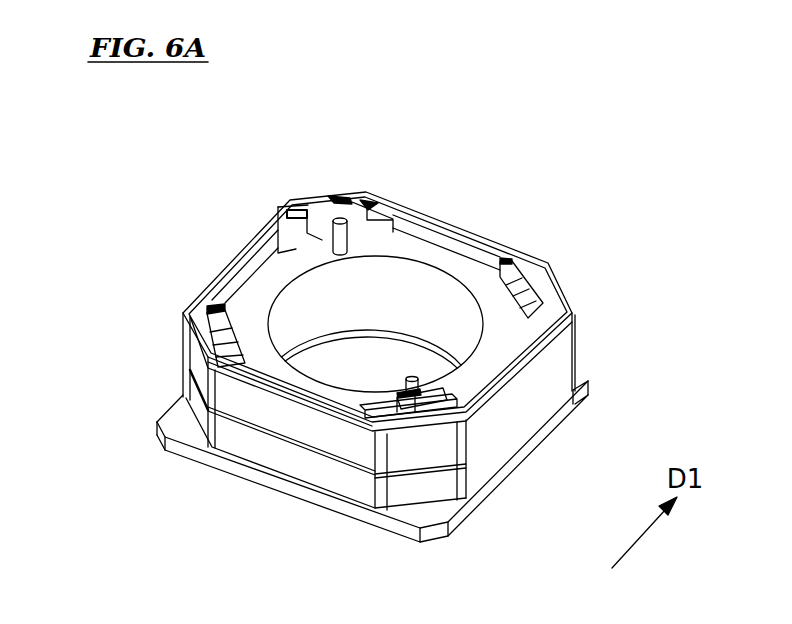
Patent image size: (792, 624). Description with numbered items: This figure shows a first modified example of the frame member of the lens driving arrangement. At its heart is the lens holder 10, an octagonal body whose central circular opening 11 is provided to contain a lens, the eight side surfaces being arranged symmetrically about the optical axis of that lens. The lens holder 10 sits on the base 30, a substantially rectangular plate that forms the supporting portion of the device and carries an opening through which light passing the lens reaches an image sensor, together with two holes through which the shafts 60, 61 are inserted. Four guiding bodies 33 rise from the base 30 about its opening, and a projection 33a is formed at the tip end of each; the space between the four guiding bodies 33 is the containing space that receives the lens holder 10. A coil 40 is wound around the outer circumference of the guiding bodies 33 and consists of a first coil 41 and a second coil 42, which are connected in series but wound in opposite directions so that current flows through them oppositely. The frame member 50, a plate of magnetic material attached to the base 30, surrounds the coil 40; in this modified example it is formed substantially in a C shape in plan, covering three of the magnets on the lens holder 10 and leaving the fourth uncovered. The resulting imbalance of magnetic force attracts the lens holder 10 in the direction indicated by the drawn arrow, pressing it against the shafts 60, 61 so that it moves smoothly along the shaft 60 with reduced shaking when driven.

The lens holder 10 is at (430, 260).
The opening 11 is at (303, 292).
The base 30 is at (357, 515).
The guiding body 33 is at (378, 206).
The projection 33a is at (337, 200).
The coil 40 is at (157, 430).
The first coil 41 is at (270, 420).
The second coil 42 is at (293, 458).
The frame member 50 is at (523, 422).
The shaft 60 is at (300, 218).
The shaft 61 is at (420, 379).